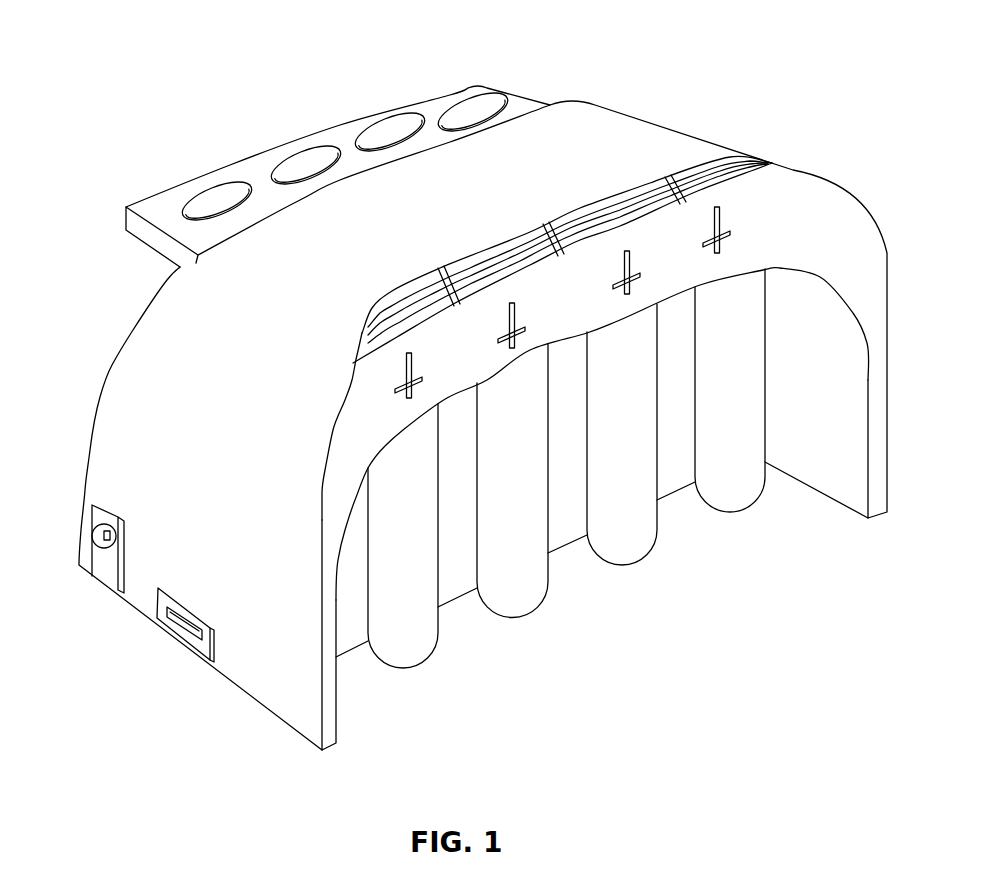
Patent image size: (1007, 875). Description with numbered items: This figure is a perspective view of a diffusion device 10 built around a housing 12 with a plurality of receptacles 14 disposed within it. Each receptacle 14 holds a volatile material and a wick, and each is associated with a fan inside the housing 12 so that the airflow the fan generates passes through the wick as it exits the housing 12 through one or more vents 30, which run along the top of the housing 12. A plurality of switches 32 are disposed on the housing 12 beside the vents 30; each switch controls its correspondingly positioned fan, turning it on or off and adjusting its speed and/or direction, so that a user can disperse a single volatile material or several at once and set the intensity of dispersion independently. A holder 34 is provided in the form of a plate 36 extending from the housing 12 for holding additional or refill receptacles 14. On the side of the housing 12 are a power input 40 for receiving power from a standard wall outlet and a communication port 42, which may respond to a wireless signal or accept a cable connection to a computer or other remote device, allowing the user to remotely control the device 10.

The device 10 is at (117, 42).
The housing 12 is at (613, 123).
The receptacles 14 is at (415, 643).
The vents 30 is at (412, 292).
The switches 32 is at (424, 381).
The holder 34 is at (291, 120).
The plate 36 is at (178, 190).
The power input 40 is at (92, 514).
The communication port 42 is at (170, 615).